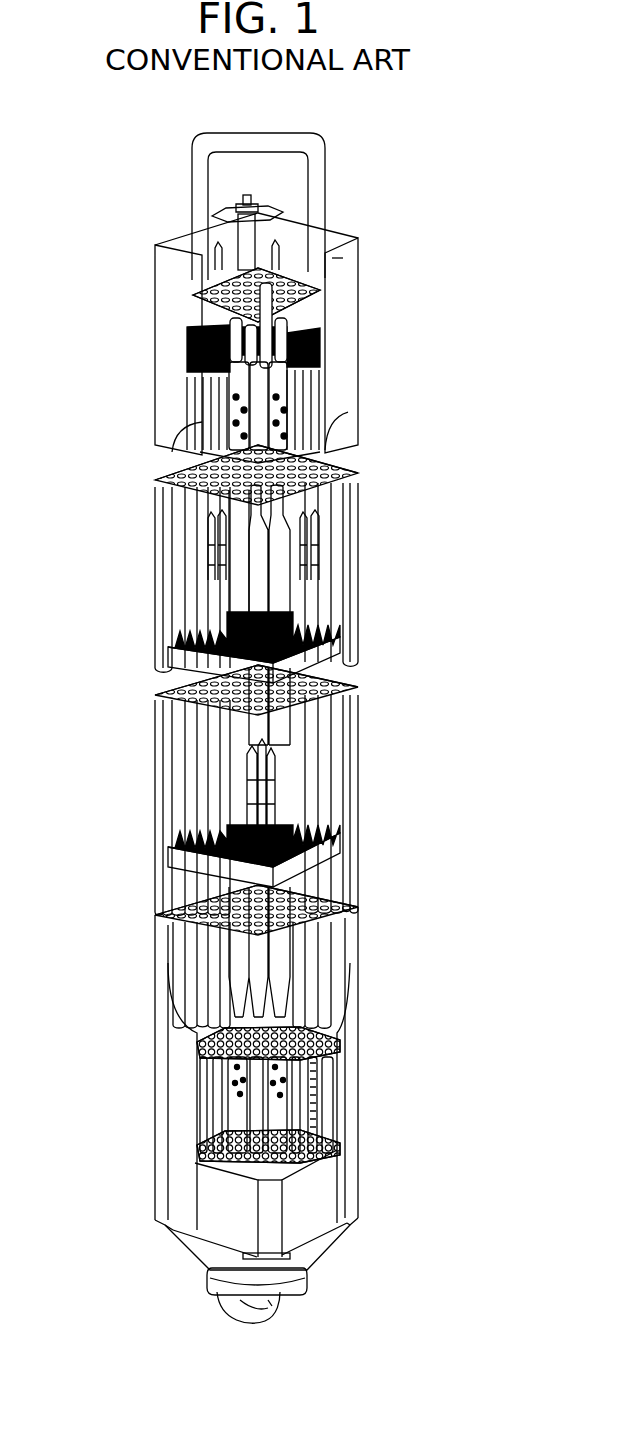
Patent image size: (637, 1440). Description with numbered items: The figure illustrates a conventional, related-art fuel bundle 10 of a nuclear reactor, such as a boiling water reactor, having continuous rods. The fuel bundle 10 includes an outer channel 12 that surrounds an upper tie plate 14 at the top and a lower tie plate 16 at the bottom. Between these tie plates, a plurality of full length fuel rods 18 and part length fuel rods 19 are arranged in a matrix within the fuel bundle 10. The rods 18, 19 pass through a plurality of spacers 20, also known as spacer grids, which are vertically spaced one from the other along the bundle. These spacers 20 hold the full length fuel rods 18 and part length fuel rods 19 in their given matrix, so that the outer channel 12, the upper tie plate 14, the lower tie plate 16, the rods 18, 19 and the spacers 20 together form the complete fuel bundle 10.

The fuel bundle 10 is at (377, 403).
The outer channel 12 is at (143, 864).
The upper tie plate 14 is at (214, 319).
The lower tie plate 16 is at (308, 1205).
The full length fuel rods 18 is at (200, 580).
The part length fuel rods 19 is at (272, 817).
The spacers 20 is at (185, 653).